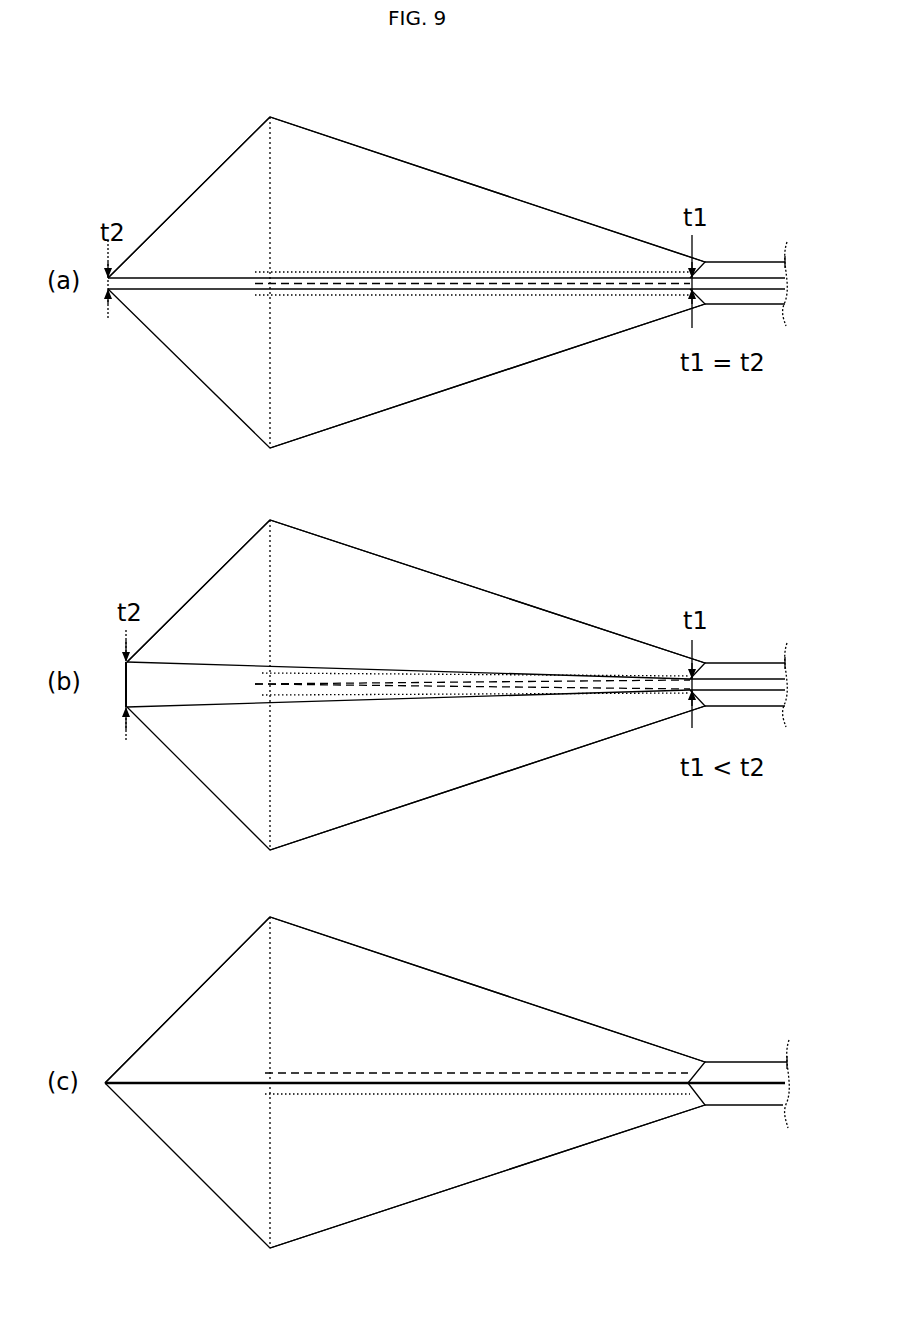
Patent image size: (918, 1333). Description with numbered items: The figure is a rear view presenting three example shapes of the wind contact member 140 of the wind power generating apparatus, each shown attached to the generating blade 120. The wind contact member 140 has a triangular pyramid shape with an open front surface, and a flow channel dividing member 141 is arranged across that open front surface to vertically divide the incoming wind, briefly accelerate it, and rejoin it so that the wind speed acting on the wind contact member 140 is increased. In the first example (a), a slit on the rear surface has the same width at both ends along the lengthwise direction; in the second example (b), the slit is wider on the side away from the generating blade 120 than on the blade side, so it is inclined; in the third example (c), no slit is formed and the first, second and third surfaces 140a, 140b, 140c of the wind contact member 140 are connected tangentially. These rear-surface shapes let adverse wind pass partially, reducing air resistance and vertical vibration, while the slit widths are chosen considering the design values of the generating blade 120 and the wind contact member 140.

The wind contact member 140 is at (558, 130).
The first inclined surface 140a is at (232, 238).
The second inclined surface 140b is at (470, 205).
The third inclined surface 140c is at (468, 370).
The flow channel dividing member 141 is at (590, 270).
The generating blade 120 is at (748, 262).